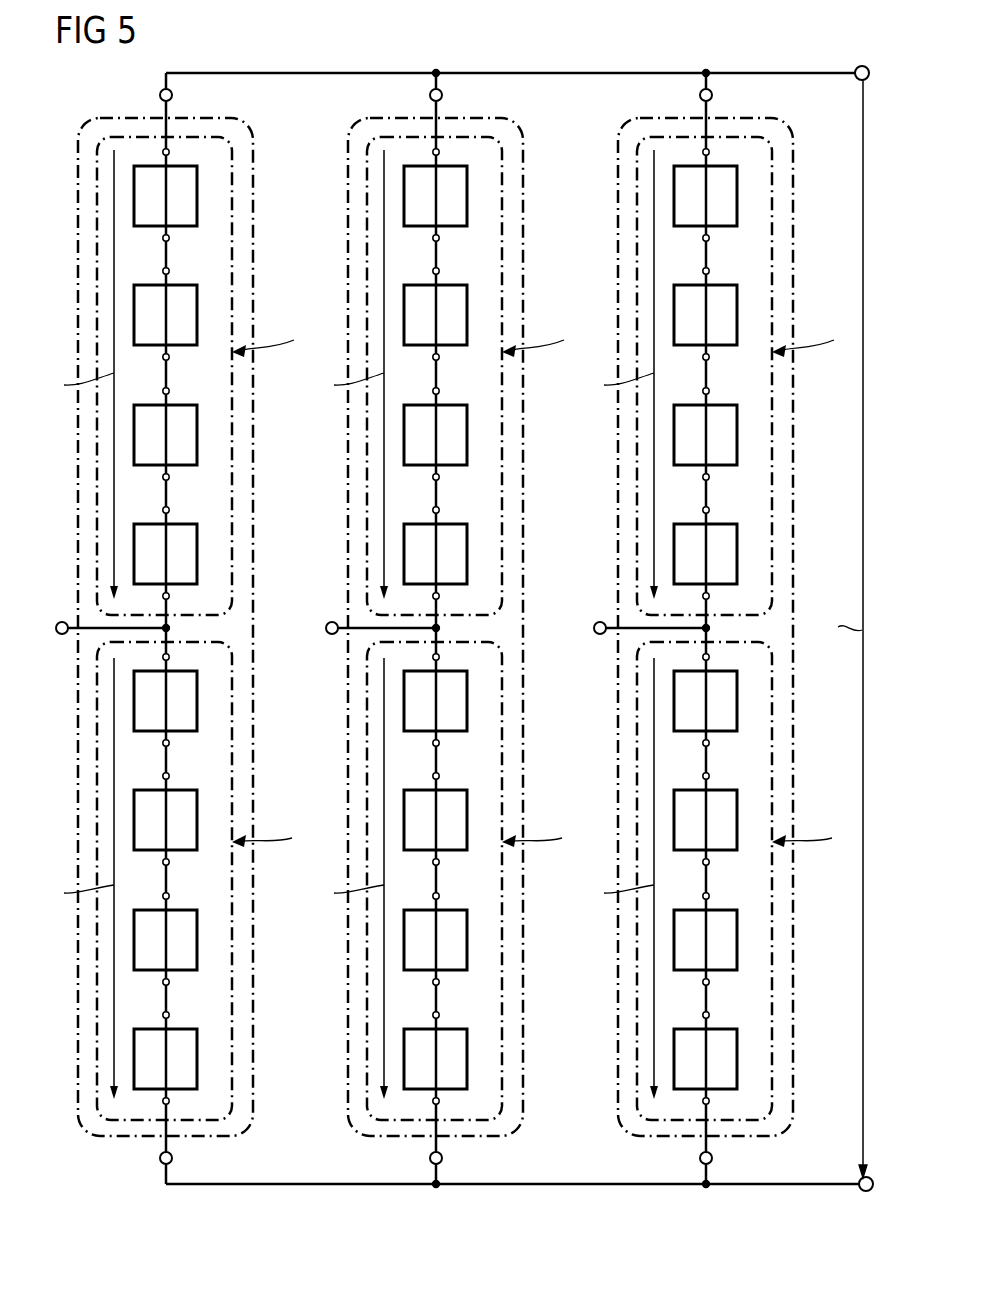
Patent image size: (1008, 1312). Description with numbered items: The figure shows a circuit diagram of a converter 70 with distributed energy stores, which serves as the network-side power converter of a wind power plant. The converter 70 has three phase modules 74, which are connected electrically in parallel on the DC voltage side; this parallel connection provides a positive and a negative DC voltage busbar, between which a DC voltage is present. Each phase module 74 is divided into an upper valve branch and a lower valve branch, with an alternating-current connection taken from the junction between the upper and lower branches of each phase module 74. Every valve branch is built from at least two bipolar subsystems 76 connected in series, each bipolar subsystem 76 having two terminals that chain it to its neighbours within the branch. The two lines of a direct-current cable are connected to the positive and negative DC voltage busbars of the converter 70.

The converter 70 is at (529, 96).
The phase module 74 is at (445, 627).
The bipolar subsystem 76 is at (489, 627).